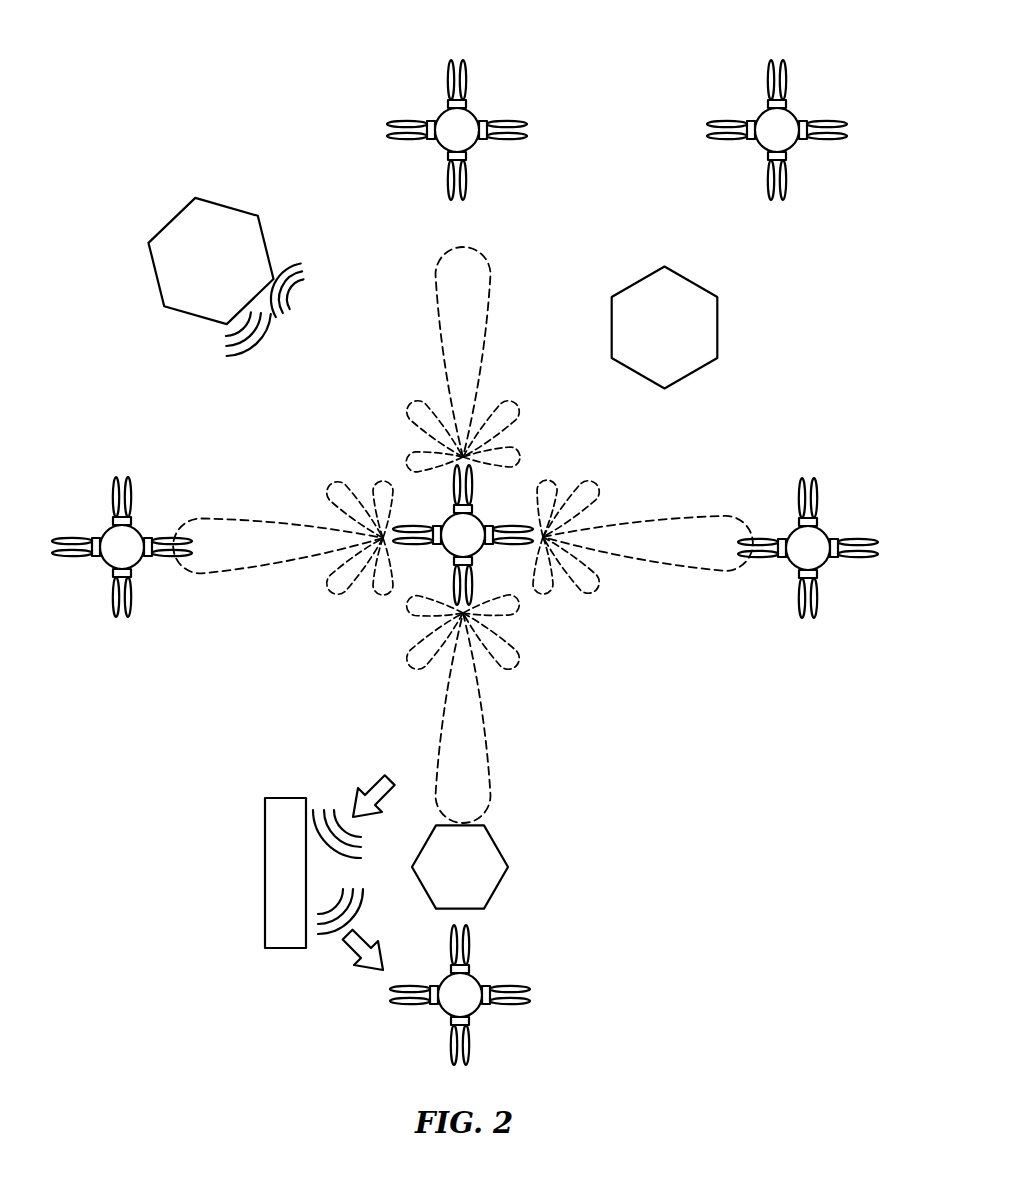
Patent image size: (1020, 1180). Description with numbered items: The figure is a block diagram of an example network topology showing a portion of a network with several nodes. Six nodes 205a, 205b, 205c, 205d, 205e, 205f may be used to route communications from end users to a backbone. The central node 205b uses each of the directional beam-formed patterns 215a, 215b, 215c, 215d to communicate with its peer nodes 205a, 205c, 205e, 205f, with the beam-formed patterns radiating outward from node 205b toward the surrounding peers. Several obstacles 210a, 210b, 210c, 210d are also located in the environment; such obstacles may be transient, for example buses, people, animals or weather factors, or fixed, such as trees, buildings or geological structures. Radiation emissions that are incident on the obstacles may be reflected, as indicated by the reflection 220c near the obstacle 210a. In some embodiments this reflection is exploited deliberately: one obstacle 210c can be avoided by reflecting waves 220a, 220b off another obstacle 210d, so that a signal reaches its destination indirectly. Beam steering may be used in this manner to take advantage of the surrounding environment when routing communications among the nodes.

The node 205a is at (137, 530).
The node 205b is at (483, 520).
The node 205c is at (478, 125).
The node 205d is at (758, 113).
The node 205e is at (820, 535).
The node 205f is at (480, 1008).
The obstacle 210a is at (168, 222).
The obstacle 210b is at (693, 280).
The obstacle 210c is at (490, 853).
The obstacle 210d is at (265, 852).
The directional beam-formed pattern 215a is at (232, 520).
The directional beam-formed pattern 215b is at (492, 297).
The directional beam-formed pattern 215c is at (707, 518).
The directional beam-formed pattern 215d is at (490, 788).
The reflected wave 220a is at (353, 797).
The reflected wave 220b is at (358, 973).
The reflection 220c is at (298, 300).